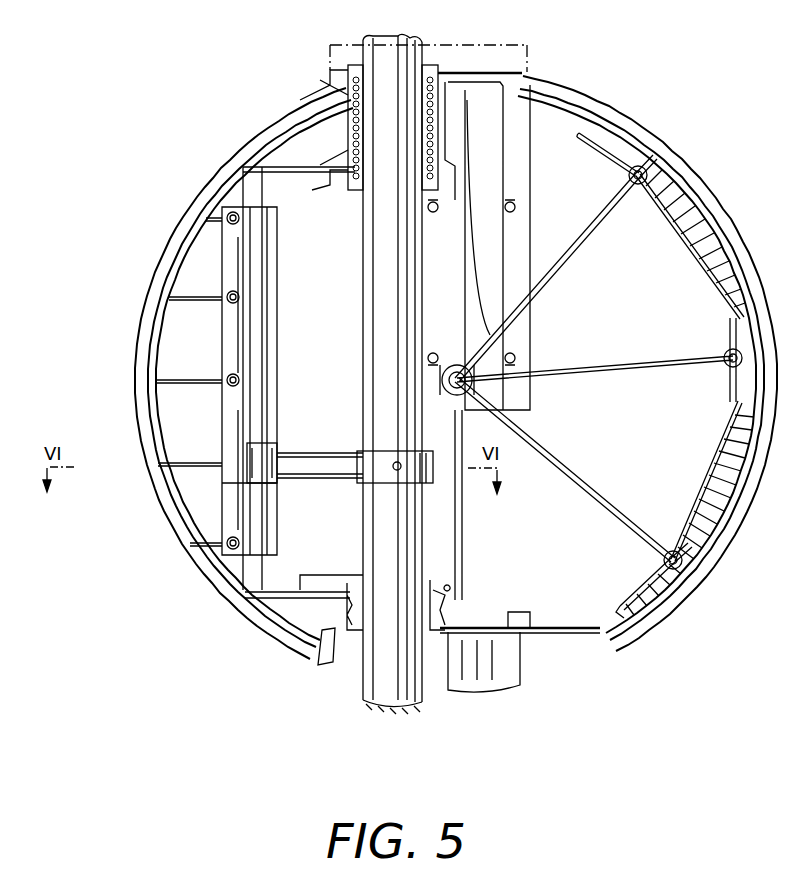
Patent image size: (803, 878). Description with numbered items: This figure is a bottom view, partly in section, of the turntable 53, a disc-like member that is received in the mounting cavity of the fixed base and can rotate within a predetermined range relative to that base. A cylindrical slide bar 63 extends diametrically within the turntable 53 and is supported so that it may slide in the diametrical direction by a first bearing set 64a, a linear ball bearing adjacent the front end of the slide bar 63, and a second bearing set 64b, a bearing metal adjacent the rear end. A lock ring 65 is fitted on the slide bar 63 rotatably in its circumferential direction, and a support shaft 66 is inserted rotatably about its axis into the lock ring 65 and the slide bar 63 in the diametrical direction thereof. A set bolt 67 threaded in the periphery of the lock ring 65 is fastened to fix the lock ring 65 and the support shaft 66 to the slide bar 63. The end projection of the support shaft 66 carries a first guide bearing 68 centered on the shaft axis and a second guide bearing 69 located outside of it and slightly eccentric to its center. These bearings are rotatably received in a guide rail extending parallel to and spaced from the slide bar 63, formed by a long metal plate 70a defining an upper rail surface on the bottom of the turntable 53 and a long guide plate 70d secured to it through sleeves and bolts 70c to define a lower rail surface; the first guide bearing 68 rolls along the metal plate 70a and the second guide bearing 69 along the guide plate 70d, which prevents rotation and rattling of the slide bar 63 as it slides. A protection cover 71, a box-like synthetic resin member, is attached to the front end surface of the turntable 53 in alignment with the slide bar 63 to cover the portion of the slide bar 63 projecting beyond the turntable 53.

The turntable 53 is at (628, 132).
The slide bar 63 is at (385, 256).
The first bearing set 64a is at (352, 118).
The second bearing set 64b is at (326, 664).
The lock ring 65 is at (458, 480).
The support shaft 66 is at (264, 600).
The set bolt 67 is at (405, 706).
The first guide bearing 68 is at (250, 436).
The second guide bearing 69 is at (252, 470).
The metal plate 70a is at (272, 338).
The bolts 70c is at (218, 288).
The guide plate 70d is at (238, 515).
The protection cover 71 is at (528, 60).